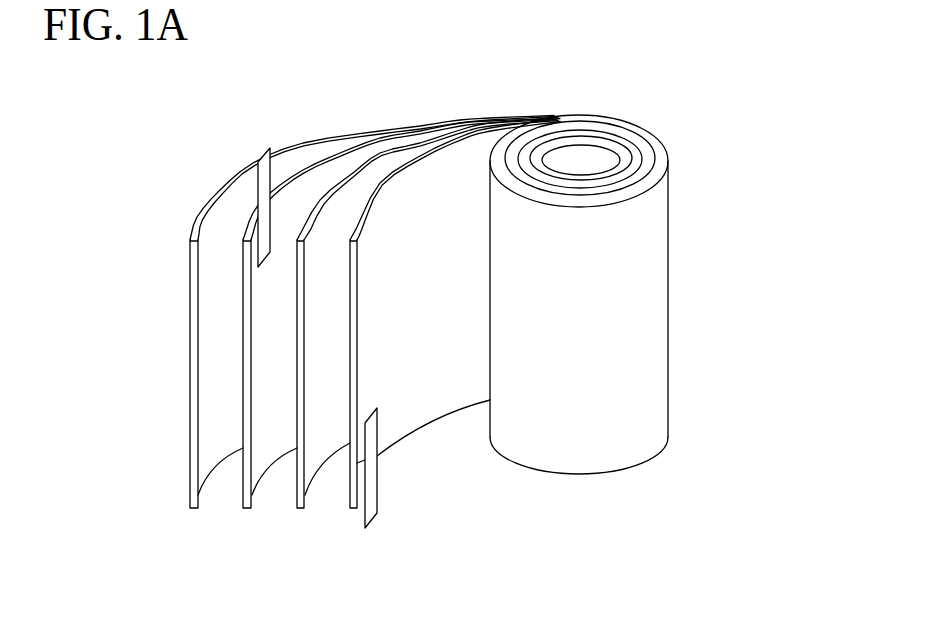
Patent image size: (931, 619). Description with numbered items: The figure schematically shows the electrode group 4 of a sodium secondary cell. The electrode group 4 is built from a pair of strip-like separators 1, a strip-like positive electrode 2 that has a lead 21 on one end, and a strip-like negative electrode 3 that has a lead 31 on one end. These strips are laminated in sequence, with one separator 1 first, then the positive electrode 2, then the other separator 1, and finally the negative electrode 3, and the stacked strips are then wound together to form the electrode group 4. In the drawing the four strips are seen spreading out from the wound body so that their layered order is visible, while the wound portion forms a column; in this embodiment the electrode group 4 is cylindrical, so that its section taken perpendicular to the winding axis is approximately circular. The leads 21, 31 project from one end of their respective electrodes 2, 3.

The separator 1 is at (375, 337).
The positive electrode 2 is at (294, 204).
The lead 21 is at (259, 158).
The negative electrode 3 is at (412, 404).
The lead 31 is at (370, 493).
The electrode group 4 is at (712, 130).